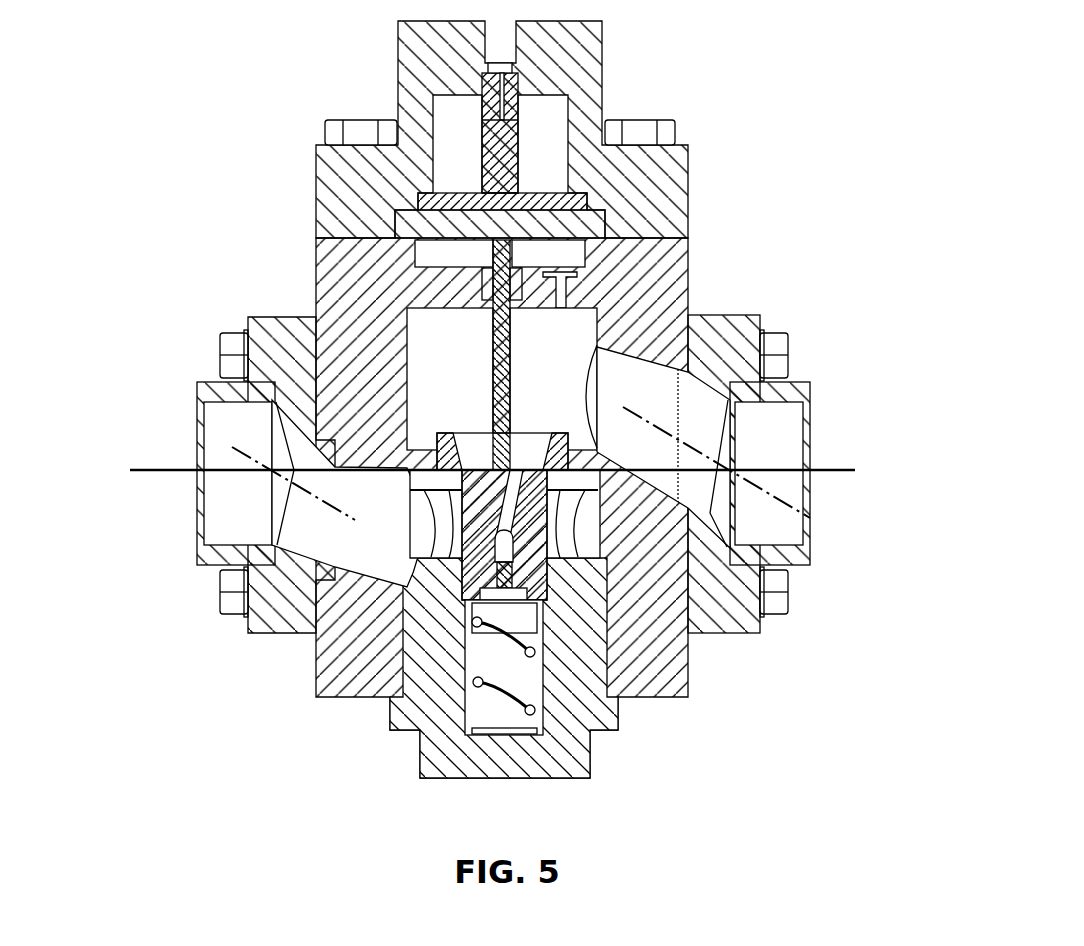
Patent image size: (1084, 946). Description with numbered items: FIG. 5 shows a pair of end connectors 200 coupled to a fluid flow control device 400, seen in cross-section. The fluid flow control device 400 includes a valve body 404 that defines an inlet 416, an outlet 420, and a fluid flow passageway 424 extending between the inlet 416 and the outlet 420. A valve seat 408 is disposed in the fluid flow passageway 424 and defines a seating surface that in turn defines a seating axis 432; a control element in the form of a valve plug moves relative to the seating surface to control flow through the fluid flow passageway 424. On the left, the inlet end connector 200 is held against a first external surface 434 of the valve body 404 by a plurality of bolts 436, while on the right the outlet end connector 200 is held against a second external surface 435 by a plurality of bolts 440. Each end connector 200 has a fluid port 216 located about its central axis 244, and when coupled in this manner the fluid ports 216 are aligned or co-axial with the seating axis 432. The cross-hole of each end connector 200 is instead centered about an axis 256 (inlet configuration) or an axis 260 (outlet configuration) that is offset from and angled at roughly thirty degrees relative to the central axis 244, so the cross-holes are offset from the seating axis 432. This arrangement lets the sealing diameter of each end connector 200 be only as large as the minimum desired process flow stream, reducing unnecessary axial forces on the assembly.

The fluid flow control device 400 is at (694, 90).
The valve body 404 is at (342, 262).
The valve seat 408 is at (425, 452).
The inlet 416 is at (378, 583).
The outlet 420 is at (459, 433).
The fluid flow passageway 424 is at (457, 530).
The first external surface 434 is at (320, 672).
The second external surface 435 is at (702, 668).
The bolts 436 is at (221, 333).
The bolts 440 is at (776, 330).
The end connector 200 is at (241, 647).
The fluid port 216 is at (233, 428).
The central axis 244 is at (503, 468).
The seating axis 432 is at (178, 472).
The axis 256 is at (240, 457).
The axis 260 is at (798, 513).